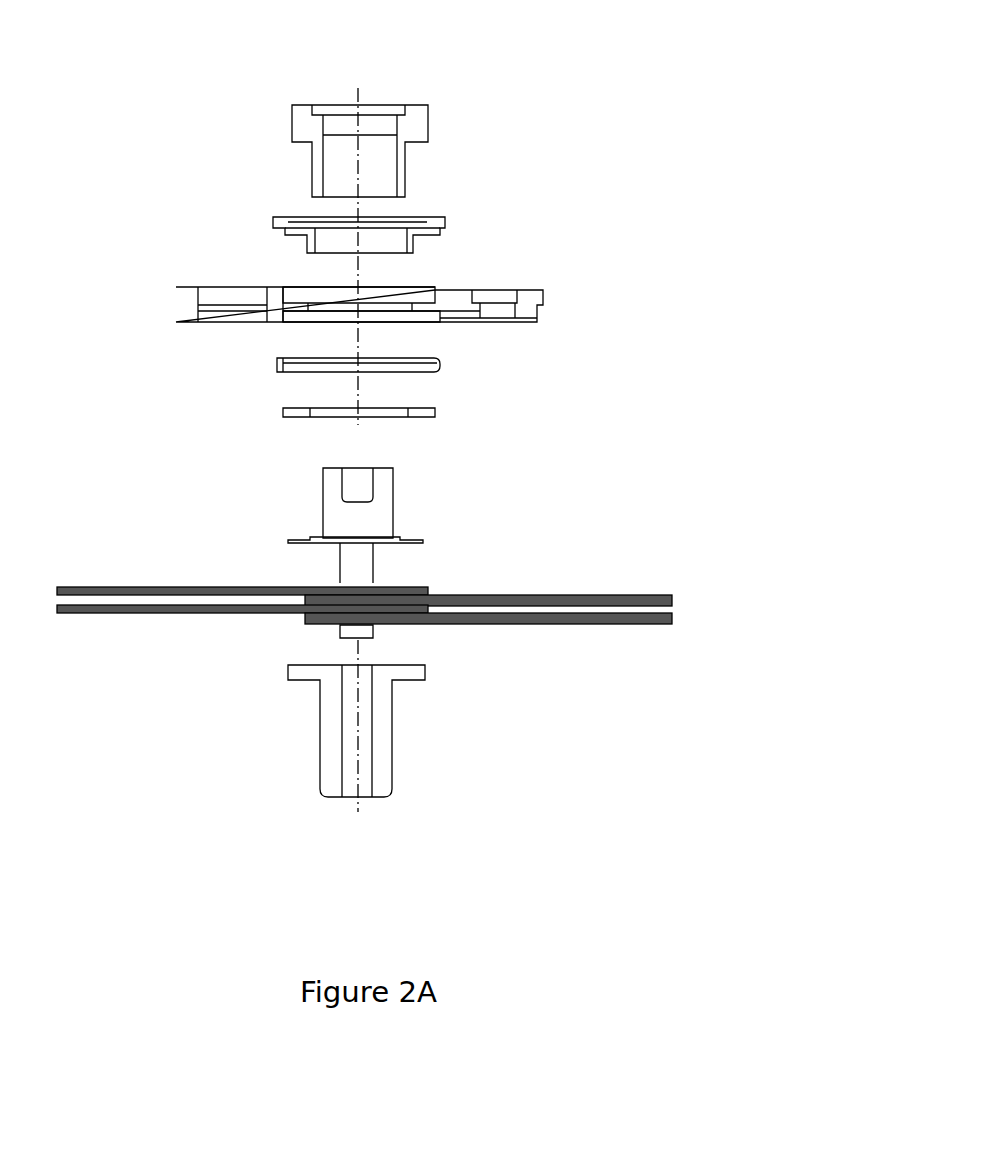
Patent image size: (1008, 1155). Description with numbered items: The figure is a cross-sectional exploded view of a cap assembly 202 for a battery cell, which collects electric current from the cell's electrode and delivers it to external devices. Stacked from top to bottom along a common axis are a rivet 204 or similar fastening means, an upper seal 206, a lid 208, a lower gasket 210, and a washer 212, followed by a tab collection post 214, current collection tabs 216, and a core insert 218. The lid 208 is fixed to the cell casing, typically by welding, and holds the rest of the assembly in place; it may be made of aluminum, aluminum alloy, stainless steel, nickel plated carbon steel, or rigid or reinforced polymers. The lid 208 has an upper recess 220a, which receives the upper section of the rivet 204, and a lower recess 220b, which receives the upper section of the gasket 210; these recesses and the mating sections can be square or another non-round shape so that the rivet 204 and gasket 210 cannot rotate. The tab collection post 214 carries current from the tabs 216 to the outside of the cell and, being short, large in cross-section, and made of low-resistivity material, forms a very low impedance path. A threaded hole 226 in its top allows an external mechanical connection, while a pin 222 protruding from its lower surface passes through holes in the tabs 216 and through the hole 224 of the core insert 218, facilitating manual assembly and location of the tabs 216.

The cap assembly 202 is at (192, 127).
The rivet 204 is at (447, 120).
The upper seal 206 is at (458, 227).
The lid 208 is at (479, 289).
The upper recess 220a is at (439, 287).
The lower recess 220b is at (440, 324).
The lower gasket 210 is at (448, 365).
The washer 212 is at (443, 415).
The tab collection post 214 is at (517, 553).
The threaded hole 226 is at (380, 497).
The pin 222 is at (382, 567).
The current collection tabs 216 is at (708, 607).
The core insert 218 is at (495, 731).
The hole 224 is at (380, 777).